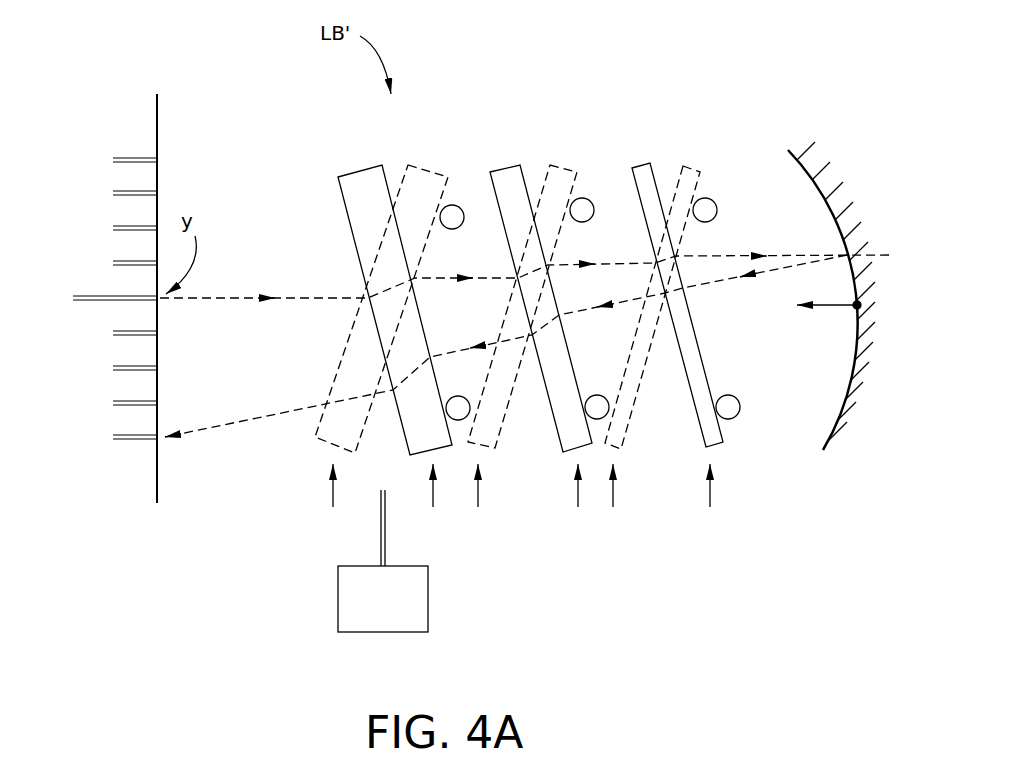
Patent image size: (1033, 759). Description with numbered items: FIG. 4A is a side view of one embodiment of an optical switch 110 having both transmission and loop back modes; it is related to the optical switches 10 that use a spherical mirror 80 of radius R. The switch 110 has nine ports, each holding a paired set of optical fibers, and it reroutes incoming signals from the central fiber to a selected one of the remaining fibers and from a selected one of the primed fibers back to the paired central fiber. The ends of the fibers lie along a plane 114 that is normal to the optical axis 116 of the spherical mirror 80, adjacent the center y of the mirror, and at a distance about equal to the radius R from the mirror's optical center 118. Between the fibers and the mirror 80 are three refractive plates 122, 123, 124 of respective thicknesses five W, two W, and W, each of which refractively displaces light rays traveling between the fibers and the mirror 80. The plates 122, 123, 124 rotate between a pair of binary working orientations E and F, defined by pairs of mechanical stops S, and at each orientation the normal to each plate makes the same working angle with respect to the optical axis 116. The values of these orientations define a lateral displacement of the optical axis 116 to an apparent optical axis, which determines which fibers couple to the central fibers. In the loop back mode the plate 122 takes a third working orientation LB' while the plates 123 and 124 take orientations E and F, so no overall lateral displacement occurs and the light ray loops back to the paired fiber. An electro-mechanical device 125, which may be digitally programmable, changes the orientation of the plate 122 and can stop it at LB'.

The optical switch 10 is at (598, 92).
The spherical mirror 80 is at (813, 188).
The optical switch 110 is at (657, 568).
The plane 114 is at (157, 127).
The optical axis 116 is at (832, 307).
The optical center 118 is at (853, 313).
The plate 122 is at (435, 165).
The plate 123 is at (575, 168).
The plate 124 is at (697, 165).
The electro-mechanical device 125 is at (361, 616).